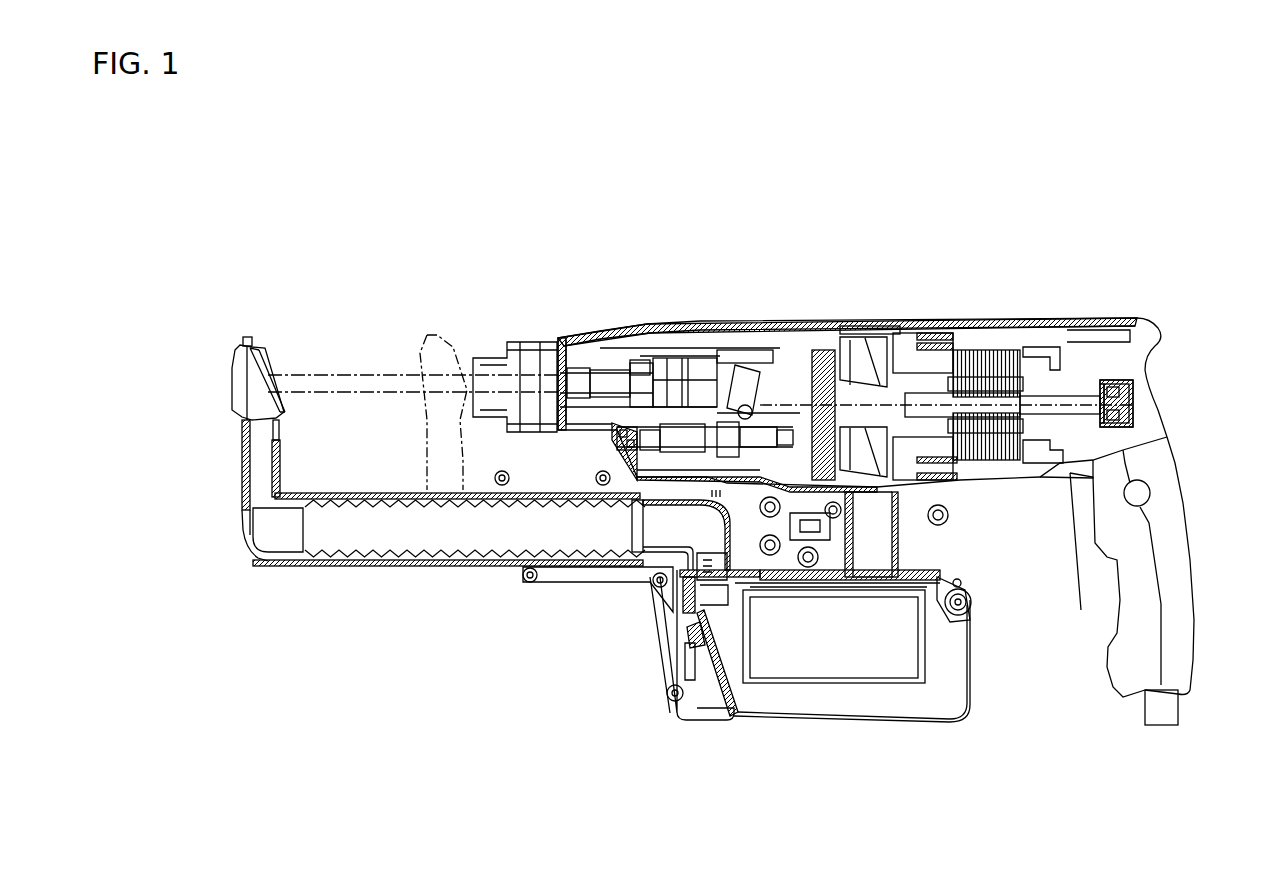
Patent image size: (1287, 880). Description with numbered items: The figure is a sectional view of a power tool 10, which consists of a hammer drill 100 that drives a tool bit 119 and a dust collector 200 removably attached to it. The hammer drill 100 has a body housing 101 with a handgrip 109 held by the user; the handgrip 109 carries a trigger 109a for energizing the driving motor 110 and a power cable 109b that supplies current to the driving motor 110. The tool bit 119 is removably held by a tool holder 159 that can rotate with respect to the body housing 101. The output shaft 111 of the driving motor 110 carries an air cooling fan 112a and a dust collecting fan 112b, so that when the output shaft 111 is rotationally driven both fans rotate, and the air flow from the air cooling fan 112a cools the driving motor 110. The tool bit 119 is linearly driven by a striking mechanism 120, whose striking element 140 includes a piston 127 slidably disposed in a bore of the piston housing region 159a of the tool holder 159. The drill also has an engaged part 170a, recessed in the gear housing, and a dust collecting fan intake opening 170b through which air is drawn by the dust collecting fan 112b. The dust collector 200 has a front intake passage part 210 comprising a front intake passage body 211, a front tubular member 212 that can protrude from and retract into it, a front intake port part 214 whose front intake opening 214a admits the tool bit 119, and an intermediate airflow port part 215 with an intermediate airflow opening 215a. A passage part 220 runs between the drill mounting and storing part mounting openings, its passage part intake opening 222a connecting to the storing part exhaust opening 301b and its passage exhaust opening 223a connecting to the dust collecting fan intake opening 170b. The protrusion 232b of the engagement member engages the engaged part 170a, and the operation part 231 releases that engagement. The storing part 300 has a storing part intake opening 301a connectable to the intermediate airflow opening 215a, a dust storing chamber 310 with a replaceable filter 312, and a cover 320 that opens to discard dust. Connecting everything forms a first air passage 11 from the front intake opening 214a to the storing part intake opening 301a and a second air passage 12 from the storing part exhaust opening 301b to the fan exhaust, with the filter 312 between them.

The power tool 10 is at (250, 241).
The hammer drill 100 is at (489, 241).
The body housing 101 is at (1143, 317).
The handgrip 109 is at (1183, 552).
The trigger 109a is at (1100, 585).
The power cable 109b is at (1165, 707).
The driving motor 110 is at (993, 350).
The output shaft 111 is at (1077, 402).
The air cooling fan 112a is at (907, 350).
The dust collecting fan 112b is at (848, 318).
The tool bit 119 is at (370, 380).
The striking mechanism 120 is at (757, 365).
The piston 127 is at (673, 357).
The striking element 140 is at (643, 356).
The tool holder 159 is at (540, 363).
The piston housing region 159a is at (717, 353).
The engaged part 170a is at (850, 358).
The dust collecting fan intake opening 170b is at (917, 463).
The dust collector 200 is at (446, 686).
The front intake passage part 210 is at (361, 574).
The front intake passage body 211 is at (490, 570).
The front tubular member 212 is at (290, 570).
The front intake port part 214 is at (240, 437).
The front intake opening 214a is at (235, 388).
The intermediate airflow port part 215 is at (647, 553).
The intermediate airflow opening 215a is at (687, 633).
The passage part 220 is at (905, 567).
The passage part intake opening 222a is at (962, 586).
The passage exhaust opening 223a is at (949, 516).
The operation part 231 is at (792, 542).
The protrusion 232b is at (713, 572).
The storing part 300 is at (799, 756).
The storing part intake opening 301a is at (690, 570).
The storing part exhaust opening 301b is at (877, 575).
The dust storing chamber 310 is at (837, 704).
The filter 312 is at (847, 655).
The cover 320 is at (960, 715).
The first air passage 11 is at (523, 549).
The second air passage 12 is at (912, 546).